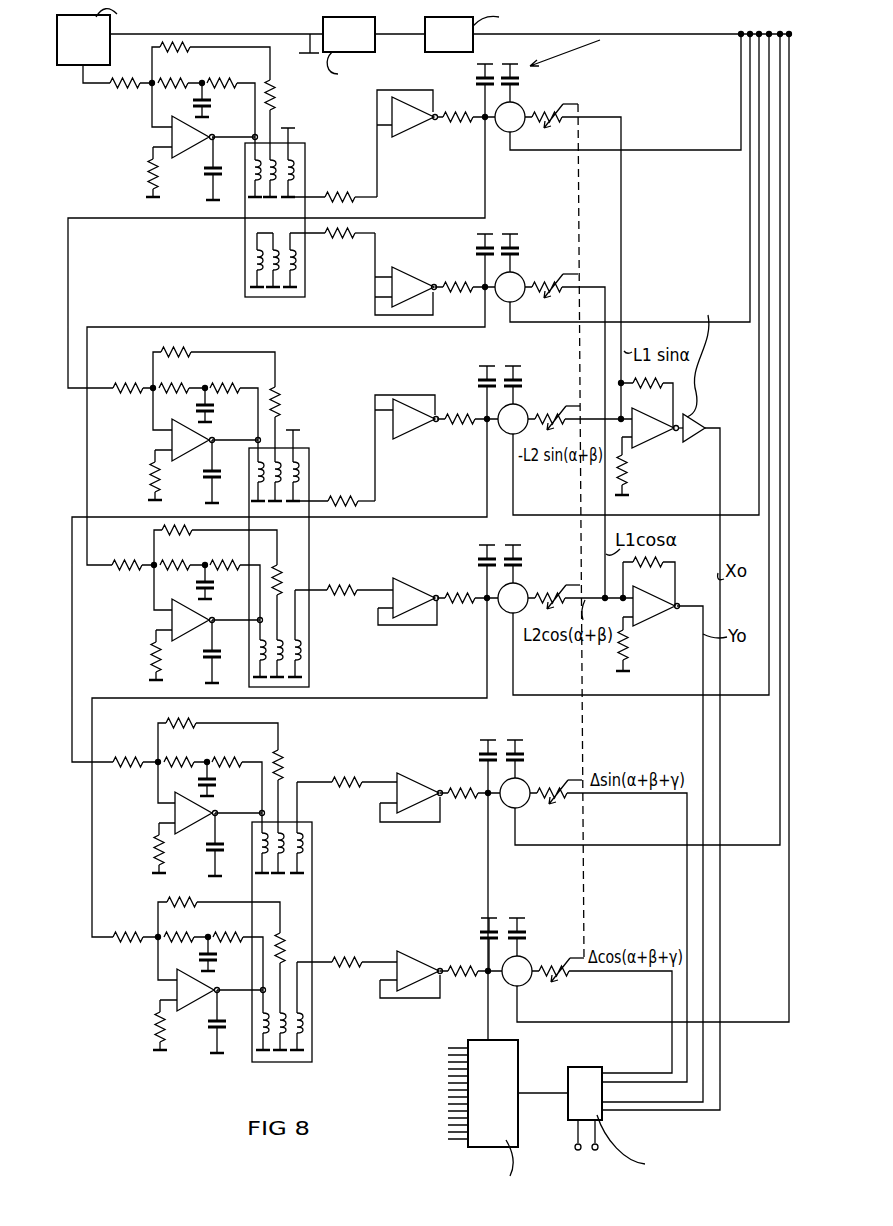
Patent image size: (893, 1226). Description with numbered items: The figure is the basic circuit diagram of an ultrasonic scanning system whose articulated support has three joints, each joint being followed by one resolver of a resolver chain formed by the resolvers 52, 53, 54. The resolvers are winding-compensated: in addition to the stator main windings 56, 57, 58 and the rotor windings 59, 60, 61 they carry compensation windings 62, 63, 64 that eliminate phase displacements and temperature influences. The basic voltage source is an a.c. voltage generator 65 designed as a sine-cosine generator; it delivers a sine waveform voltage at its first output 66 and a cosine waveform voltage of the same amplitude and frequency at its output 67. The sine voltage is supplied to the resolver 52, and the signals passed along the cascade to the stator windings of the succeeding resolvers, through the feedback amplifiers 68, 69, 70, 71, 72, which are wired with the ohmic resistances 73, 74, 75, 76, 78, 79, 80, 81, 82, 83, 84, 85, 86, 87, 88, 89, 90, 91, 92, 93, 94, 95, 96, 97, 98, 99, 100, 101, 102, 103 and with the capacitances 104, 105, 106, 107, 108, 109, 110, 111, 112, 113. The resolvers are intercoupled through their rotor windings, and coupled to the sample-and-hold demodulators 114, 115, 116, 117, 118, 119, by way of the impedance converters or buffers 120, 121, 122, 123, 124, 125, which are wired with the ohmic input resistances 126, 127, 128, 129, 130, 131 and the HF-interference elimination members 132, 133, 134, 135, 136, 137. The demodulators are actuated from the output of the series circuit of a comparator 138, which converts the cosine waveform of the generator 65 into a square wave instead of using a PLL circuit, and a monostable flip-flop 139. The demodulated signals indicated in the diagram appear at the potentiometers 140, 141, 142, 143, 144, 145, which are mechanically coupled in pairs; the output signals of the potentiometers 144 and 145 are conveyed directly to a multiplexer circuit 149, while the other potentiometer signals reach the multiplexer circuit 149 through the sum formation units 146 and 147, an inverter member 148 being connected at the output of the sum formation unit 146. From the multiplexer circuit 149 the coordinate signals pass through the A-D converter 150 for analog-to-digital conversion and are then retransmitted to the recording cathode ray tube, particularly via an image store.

The resolver 52 is at (306, 165).
The resolver 53 is at (310, 565).
The resolver 54 is at (313, 892).
The stator main winding 56 is at (250, 190).
The stator main winding 57 is at (257, 468).
The stator main winding 58 is at (260, 845).
The rotor winding 59 is at (297, 140).
The rotor winding 60 is at (298, 462).
The rotor winding 61 is at (305, 845).
The compensation winding 62 is at (252, 157).
The compensation winding 63 is at (300, 484).
The compensation winding 64 is at (305, 860).
The a.c. voltage generator 65 is at (178, 36).
The first output 66 is at (81, 81).
The output 67 is at (147, 35).
The feedback amplifier 68 is at (195, 150).
The feedback amplifier 69 is at (198, 450).
The feedback amplifier 70 is at (195, 632).
The feedback amplifier 71 is at (199, 825).
The feedback amplifier 72 is at (201, 1002).
The ohmic resistance 73 is at (127, 92).
The ohmic resistance 74 is at (178, 52).
The ohmic resistance 75 is at (186, 88).
The ohmic resistance 76 is at (222, 78).
The ohmic resistance 78 is at (150, 172).
The ohmic resistance 79 is at (274, 95).
The ohmic resistance 80 is at (126, 375).
The ohmic resistance 81 is at (185, 353).
The ohmic resistance 82 is at (186, 392).
The ohmic resistance 83 is at (150, 475).
The ohmic resistance 84 is at (230, 385).
The ohmic resistance 85 is at (278, 395).
The ohmic resistance 86 is at (127, 553).
The ohmic resistance 87 is at (185, 531).
The ohmic resistance 88 is at (186, 570).
The ohmic resistance 89 is at (152, 655).
The ohmic resistance 90 is at (223, 562).
The ohmic resistance 91 is at (279, 576).
The ohmic resistance 92 is at (128, 748).
The ohmic resistance 93 is at (188, 724).
The ohmic resistance 94 is at (190, 767).
The ohmic resistance 95 is at (152, 850).
The ohmic resistance 96 is at (236, 758).
The ohmic resistance 97 is at (281, 765).
The ohmic resistance 98 is at (128, 925).
The ohmic resistance 99 is at (188, 903).
The ohmic resistance 100 is at (188, 942).
The ohmic resistance 101 is at (154, 1028).
The ohmic resistance 102 is at (233, 935).
The ohmic resistance 103 is at (282, 945).
The capacitance 104 is at (209, 104).
The capacitance 105 is at (210, 183).
The capacitance 106 is at (211, 408).
The capacitance 107 is at (210, 487).
The capacitance 108 is at (210, 588).
The capacitance 109 is at (210, 668).
The capacitance 110 is at (212, 778).
The capacitance 111 is at (212, 858).
The capacitance 112 is at (214, 955).
The capacitance 113 is at (214, 1040).
The sample-and-hold demodulator 114 is at (521, 105).
The sample-and-hold demodulator 115 is at (521, 275).
The sample-and-hold demodulator 116 is at (522, 405).
The sample-and-hold demodulator 117 is at (521, 584).
The sample-and-hold demodulator 118 is at (526, 779).
The sample-and-hold demodulator 119 is at (527, 956).
The impedance converter 120 is at (412, 128).
The impedance converter 121 is at (412, 270).
The impedance converter 122 is at (414, 433).
The impedance converter 123 is at (415, 584).
The impedance converter 124 is at (414, 780).
The impedance converter 125 is at (413, 956).
The ohmic input resistance 126 is at (340, 169).
The ohmic input resistance 127 is at (333, 240).
The ohmic input resistance 128 is at (340, 495).
The ohmic input resistance 129 is at (348, 568).
The ohmic input resistance 130 is at (334, 778).
The ohmic input resistance 131 is at (337, 955).
The HF-interference elimination member 132 is at (445, 124).
The HF-interference elimination member 133 is at (450, 280).
The HF-interference elimination member 134 is at (451, 426).
The HF-interference elimination member 135 is at (451, 592).
The HF-interference elimination member 136 is at (454, 786).
The HF-interference elimination member 137 is at (452, 963).
The comparator 138 is at (395, 51).
The monostable flip-flop 139 is at (591, 30).
The potentiometer 140 is at (558, 108).
The potentiometer 141 is at (562, 290).
The potentiometer 142 is at (562, 415).
The potentiometer 143 is at (556, 592).
The potentiometer 144 is at (557, 806).
The potentiometer 145 is at (563, 985).
The sum formation unit 146 is at (658, 445).
The sum formation unit 147 is at (663, 619).
The inverter member 148 is at (689, 416).
The multiplexer circuit 149 is at (679, 1128).
The A-D converter 150 is at (430, 1116).